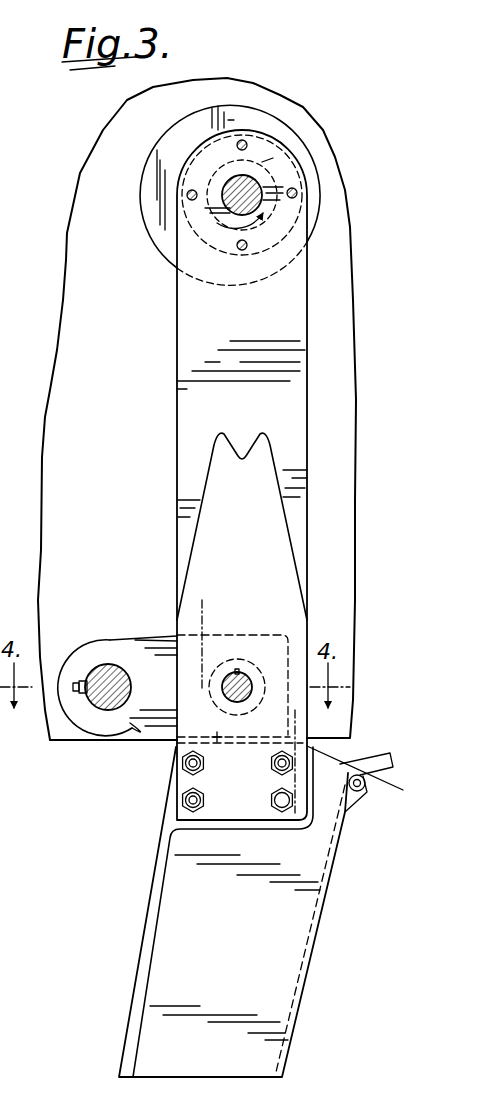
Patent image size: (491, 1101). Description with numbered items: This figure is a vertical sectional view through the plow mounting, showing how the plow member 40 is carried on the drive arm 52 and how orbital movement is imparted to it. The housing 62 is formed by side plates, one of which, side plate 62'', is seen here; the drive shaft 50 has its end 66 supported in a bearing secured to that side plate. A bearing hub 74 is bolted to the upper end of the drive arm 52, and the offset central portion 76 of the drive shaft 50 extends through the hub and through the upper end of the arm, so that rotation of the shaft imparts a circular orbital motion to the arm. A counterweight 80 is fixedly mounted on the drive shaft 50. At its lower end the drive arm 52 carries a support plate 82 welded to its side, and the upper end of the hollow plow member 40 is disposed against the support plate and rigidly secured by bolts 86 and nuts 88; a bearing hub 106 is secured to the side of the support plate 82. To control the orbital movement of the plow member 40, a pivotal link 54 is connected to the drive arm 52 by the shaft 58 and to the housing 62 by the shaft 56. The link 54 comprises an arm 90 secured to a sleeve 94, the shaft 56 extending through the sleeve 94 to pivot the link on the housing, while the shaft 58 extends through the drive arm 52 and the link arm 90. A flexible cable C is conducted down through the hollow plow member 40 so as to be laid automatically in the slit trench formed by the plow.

The plow member 40 is at (247, 962).
The drive shaft 50 is at (225, 176).
The drive arm 52 is at (174, 352).
The pivotal link 54 is at (153, 638).
The shaft 56 is at (100, 707).
The shaft 58 is at (247, 677).
The side plate 62'' is at (184, 409).
The housing 62 is at (197, 409).
The end of drive shaft 66 is at (306, 235).
The bearing hub 74 is at (270, 166).
The offset central portion 76 is at (256, 187).
The counterweight 80 is at (222, 108).
The support plate 82 is at (213, 545).
The bolts 86 is at (270, 767).
The nuts 88 is at (183, 797).
The link arm 90 is at (130, 722).
The sleeve 94 is at (98, 682).
The bearing hub 106 is at (297, 647).
The flexible cable C is at (371, 757).